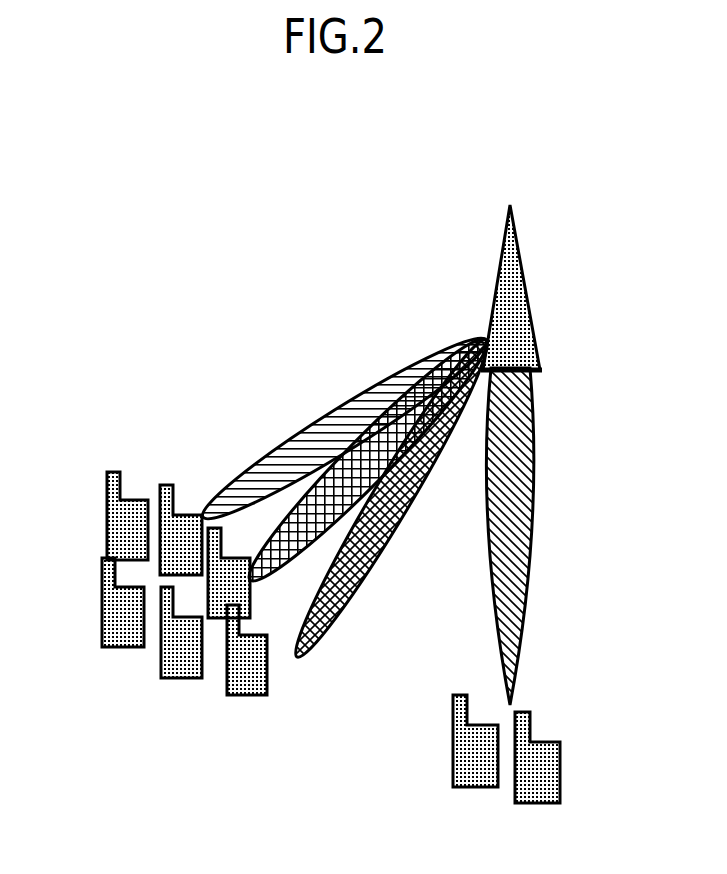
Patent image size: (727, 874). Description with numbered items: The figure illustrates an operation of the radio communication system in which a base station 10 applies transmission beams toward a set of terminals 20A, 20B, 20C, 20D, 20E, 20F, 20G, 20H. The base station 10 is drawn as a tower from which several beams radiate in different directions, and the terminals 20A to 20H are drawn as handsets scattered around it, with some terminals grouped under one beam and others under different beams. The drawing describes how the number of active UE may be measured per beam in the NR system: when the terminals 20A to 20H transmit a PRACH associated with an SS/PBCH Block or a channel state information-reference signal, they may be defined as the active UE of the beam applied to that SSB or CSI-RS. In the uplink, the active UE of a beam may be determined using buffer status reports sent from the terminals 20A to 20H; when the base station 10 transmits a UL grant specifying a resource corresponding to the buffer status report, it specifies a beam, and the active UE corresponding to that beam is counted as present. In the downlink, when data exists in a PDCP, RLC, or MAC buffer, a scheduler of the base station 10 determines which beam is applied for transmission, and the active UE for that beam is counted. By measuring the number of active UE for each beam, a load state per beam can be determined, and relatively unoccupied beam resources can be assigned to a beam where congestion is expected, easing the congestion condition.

The base station 10 is at (516, 215).
The terminal 20A is at (538, 804).
The terminal 20B is at (480, 788).
The terminal 20C is at (245, 697).
The terminal 20D is at (216, 619).
The terminal 20E is at (182, 678).
The terminal 20F is at (120, 648).
The terminal 20G is at (118, 470).
The terminal 20H is at (168, 485).